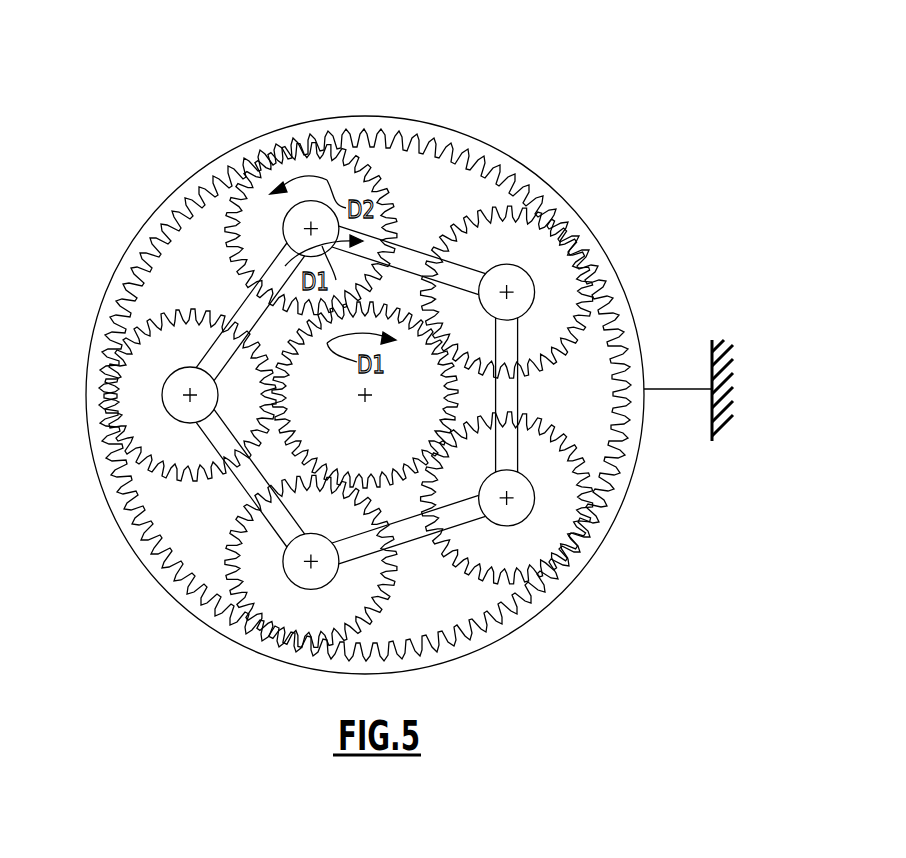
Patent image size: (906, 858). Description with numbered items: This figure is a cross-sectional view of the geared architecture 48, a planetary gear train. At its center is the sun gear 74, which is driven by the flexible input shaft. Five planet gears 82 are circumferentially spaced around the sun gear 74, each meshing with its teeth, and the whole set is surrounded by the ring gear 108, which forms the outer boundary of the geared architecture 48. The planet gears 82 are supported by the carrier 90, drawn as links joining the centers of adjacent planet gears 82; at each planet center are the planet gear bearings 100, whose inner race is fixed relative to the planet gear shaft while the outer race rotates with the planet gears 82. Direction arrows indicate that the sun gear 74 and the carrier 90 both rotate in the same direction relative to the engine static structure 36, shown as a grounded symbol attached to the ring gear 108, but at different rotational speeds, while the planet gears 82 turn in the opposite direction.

The geared architecture 48 is at (468, 93).
The ring gear 108 is at (312, 118).
The sun gear 74 is at (325, 415).
The planet gears 82 is at (400, 207).
The carrier 90 is at (508, 448).
The planet gear bearings 100 is at (282, 220).
The engine static structure 36 is at (727, 368).